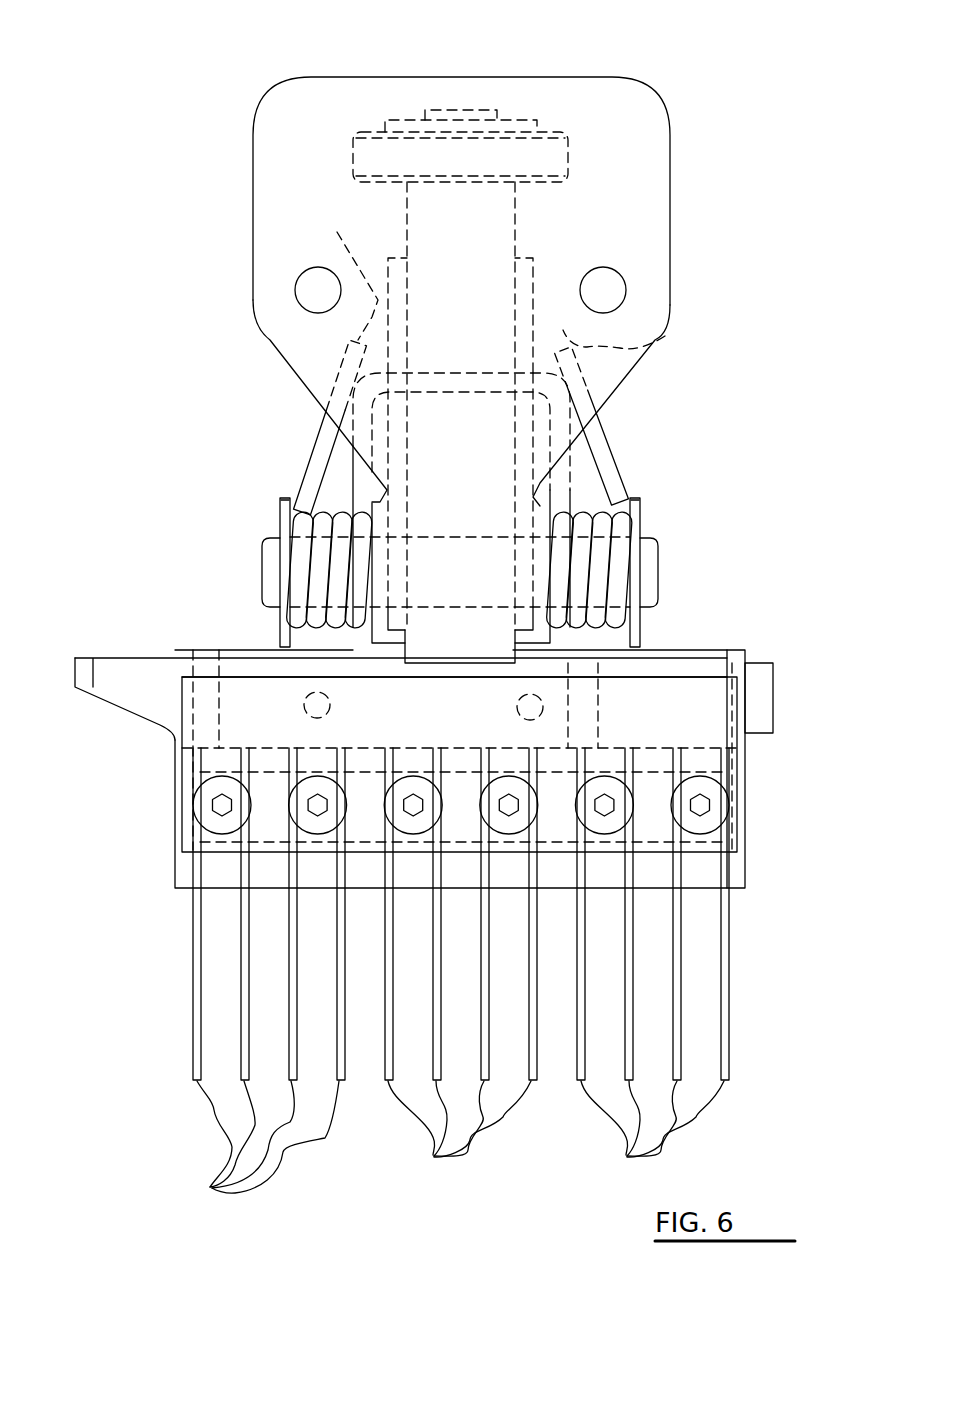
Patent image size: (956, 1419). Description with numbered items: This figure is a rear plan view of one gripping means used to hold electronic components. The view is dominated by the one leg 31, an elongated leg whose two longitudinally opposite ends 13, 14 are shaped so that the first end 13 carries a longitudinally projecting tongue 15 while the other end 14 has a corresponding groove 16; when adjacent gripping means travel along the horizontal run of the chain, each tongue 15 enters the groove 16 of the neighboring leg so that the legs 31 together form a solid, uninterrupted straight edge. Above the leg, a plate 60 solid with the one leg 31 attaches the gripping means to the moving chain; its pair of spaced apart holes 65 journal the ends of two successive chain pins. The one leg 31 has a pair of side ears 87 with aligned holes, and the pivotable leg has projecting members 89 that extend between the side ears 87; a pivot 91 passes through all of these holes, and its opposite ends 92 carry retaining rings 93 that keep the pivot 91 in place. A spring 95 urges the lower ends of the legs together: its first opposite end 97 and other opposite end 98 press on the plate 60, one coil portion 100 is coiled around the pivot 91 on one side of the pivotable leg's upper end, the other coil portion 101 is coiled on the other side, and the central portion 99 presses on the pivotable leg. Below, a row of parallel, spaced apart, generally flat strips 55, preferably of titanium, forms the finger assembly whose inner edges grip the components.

The longitudinally opposite end 13 is at (173, 777).
The longitudinally opposite end 14 is at (747, 780).
The tongue 15 is at (132, 670).
The groove 16 is at (767, 710).
The one leg 31 is at (240, 693).
The strips 55 is at (212, 1186).
The plate 60 is at (583, 100).
The holes 65 is at (312, 293).
The side ears 87 is at (547, 500).
The projecting members 89 is at (515, 258).
The pivot 91 is at (252, 565).
The opposite ends 92 is at (272, 535).
The retaining rings 93 is at (285, 500).
The spring 95 is at (340, 437).
The first opposite end 97 is at (632, 335).
The other opposite end 98 is at (337, 276).
The central portion 99 is at (458, 374).
The coil portion 100 is at (607, 507).
The other coil portion 101 is at (325, 510).